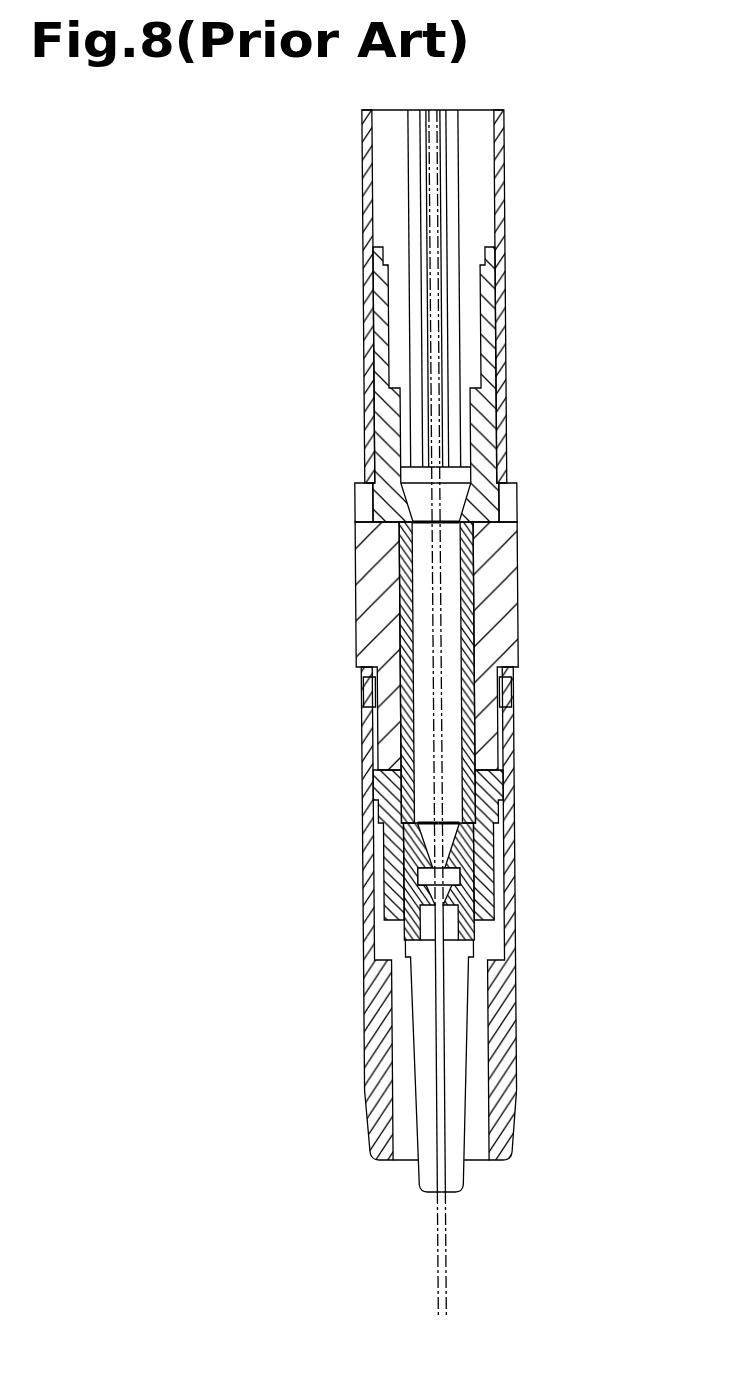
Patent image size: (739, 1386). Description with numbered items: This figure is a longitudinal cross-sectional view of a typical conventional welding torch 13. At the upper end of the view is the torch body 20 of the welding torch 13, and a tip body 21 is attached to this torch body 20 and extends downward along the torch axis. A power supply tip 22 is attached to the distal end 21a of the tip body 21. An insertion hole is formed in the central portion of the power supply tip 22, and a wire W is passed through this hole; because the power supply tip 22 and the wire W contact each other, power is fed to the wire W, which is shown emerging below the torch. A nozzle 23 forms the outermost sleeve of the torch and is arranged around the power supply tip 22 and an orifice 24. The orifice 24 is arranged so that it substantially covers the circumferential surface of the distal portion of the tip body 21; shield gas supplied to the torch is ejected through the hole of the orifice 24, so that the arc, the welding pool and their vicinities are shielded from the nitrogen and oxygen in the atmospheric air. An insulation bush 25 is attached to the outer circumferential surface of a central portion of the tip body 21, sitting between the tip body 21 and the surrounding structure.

The welding torch 13 is at (333, 313).
The torch body 20 is at (394, 377).
The tip body 21 is at (387, 552).
The distal end of the tip body 21a is at (402, 933).
The power supply tip 22 is at (410, 1004).
The nozzle 23 is at (374, 1052).
The orifice 24 is at (373, 784).
The insulation bush 25 is at (360, 510).
The wire W is at (436, 1270).